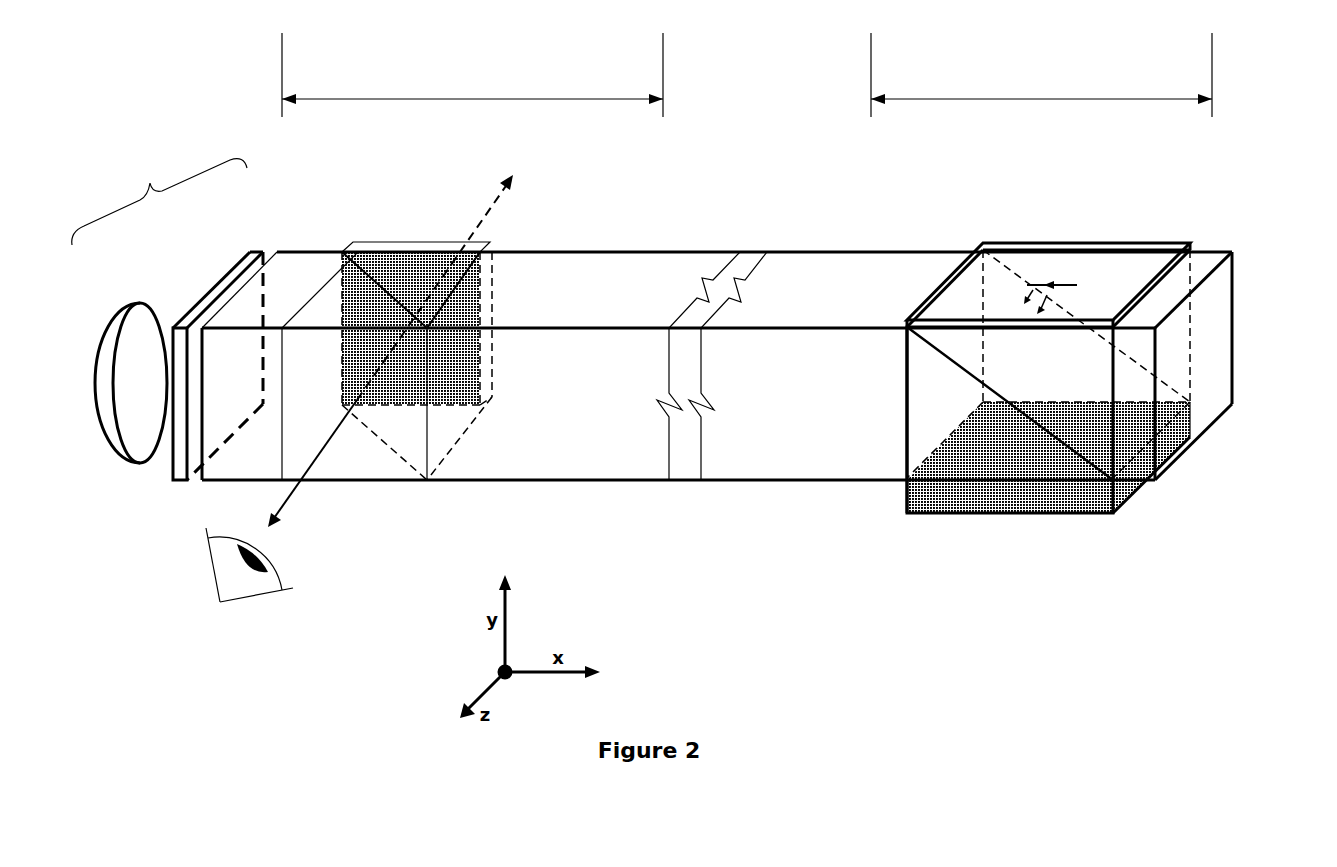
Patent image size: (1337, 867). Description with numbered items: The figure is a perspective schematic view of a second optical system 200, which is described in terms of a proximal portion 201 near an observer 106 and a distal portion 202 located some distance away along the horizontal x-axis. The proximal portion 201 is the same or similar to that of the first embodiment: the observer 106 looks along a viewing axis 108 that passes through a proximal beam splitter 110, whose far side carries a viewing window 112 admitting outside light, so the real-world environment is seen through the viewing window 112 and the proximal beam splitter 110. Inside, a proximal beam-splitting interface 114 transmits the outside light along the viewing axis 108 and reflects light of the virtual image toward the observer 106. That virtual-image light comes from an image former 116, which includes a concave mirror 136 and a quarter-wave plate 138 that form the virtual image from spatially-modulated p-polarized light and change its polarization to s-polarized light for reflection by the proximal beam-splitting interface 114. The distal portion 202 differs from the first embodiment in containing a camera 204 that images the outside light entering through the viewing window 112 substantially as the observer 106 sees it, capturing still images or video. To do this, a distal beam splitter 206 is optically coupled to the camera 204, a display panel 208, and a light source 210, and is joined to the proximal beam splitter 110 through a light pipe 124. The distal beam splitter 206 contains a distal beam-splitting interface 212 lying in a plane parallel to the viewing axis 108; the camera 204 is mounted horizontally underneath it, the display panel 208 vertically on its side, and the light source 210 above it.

The observer 106 is at (235, 603).
The viewing axis 108 is at (490, 217).
The proximal beam splitter 110 is at (427, 447).
The viewing window 112 is at (423, 242).
The proximal beam-splitting interface 114 is at (388, 243).
The image former 116 is at (159, 202).
The light pipe 124 is at (685, 483).
The concave mirror 136 is at (117, 317).
The quarter-wave plate 138 is at (255, 250).
The second optical system 200 is at (726, 620).
The proximal portion 201 is at (472, 75).
The distal portion 202 is at (1041, 75).
The camera 204 is at (1067, 513).
The distal beam splitter 206 is at (903, 420).
The display panel 208 is at (1233, 353).
The light source 210 is at (1073, 283).
The distal beam-splitting interface 212 is at (922, 347).